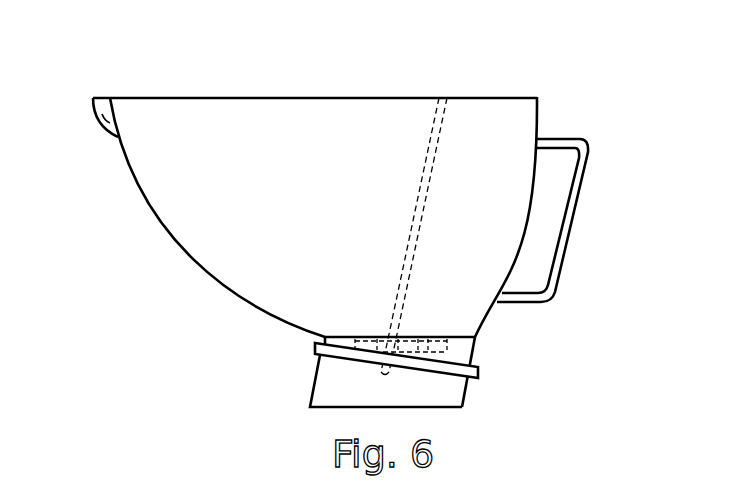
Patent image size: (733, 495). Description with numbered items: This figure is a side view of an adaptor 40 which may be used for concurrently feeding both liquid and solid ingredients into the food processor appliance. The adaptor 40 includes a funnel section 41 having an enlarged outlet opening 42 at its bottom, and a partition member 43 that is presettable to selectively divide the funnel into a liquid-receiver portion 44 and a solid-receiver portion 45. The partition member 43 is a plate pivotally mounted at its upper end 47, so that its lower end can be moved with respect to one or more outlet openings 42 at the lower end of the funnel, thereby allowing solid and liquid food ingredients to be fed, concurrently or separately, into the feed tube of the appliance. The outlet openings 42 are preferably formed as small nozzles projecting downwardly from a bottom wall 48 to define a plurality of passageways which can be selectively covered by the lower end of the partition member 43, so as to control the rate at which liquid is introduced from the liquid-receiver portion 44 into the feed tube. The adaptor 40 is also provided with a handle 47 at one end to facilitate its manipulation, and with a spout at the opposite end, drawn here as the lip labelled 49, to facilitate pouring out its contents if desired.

The adaptor 40 is at (622, 110).
The funnel section 41 is at (187, 236).
The outlet opening 42 is at (377, 340).
The partition member 43 is at (428, 155).
The liquid-receiver portion 44 is at (459, 204).
The solid-receiver portion 45 is at (241, 216).
The handle 47 is at (568, 248).
The bottom wall 48 is at (465, 333).
The spout 49 is at (105, 122).